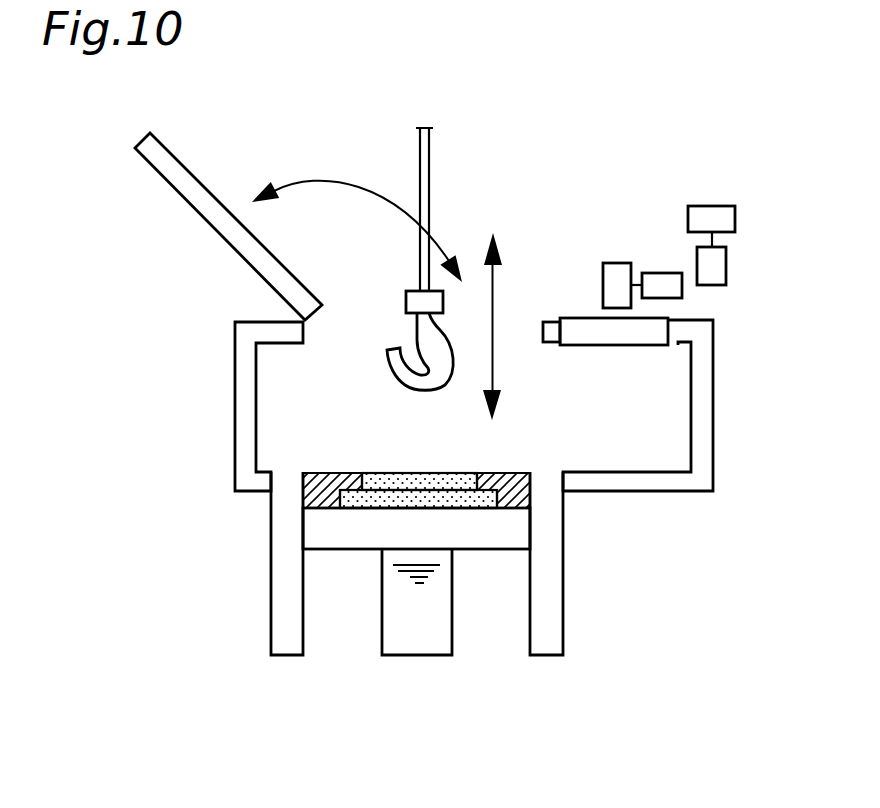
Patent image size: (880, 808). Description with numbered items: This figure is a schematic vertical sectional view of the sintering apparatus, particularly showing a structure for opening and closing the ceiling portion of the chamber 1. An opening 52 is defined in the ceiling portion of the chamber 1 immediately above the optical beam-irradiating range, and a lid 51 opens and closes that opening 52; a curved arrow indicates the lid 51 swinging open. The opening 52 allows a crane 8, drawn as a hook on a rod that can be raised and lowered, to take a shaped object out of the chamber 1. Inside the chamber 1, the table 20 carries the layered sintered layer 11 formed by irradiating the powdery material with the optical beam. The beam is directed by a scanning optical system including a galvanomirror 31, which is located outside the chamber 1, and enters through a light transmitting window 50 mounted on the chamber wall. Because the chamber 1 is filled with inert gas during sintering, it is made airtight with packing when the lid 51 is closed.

The tank 1 is at (273, 412).
The crane 8 is at (430, 148).
The sintered layer 11 is at (385, 473).
The table 20 is at (507, 525).
The galvanomirror 31 is at (710, 220).
The light transmitting window 50 is at (657, 333).
The lid 51 is at (173, 187).
The opening 52 is at (515, 328).